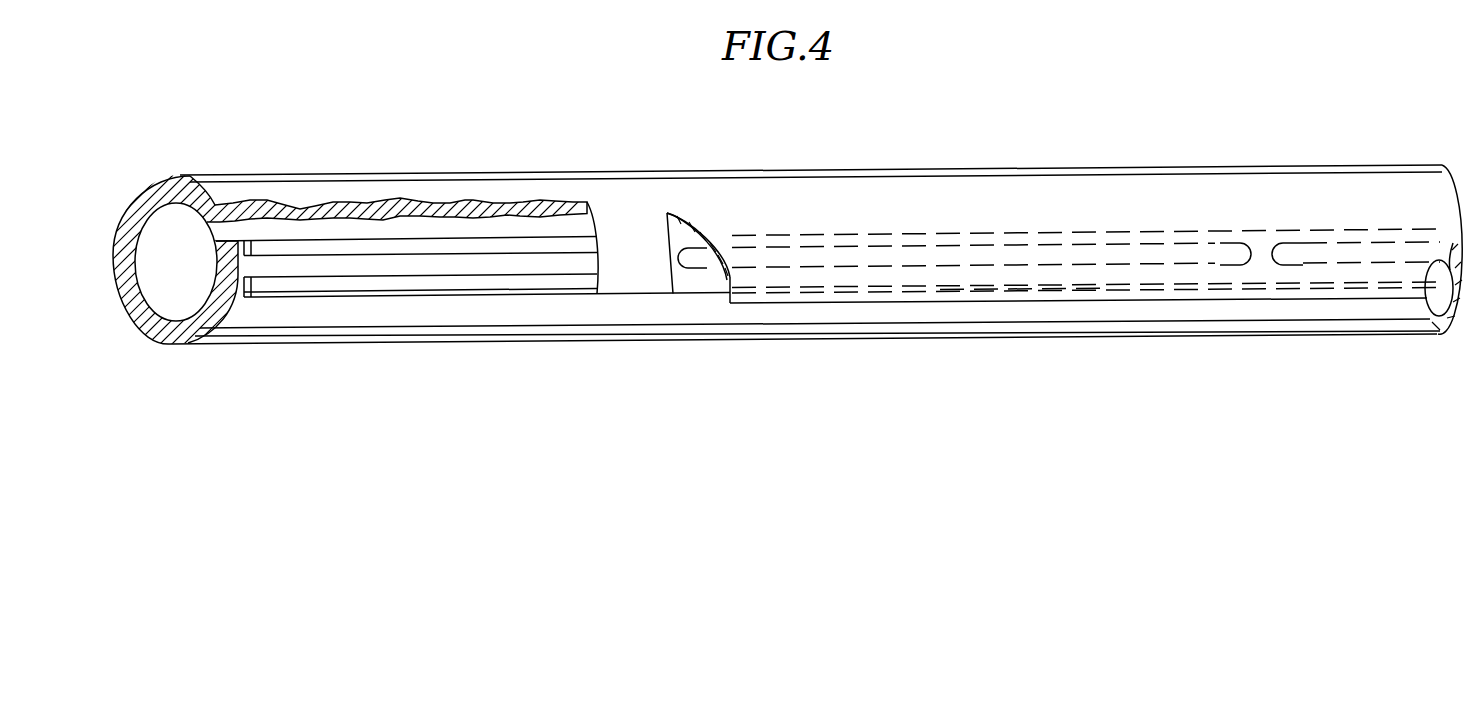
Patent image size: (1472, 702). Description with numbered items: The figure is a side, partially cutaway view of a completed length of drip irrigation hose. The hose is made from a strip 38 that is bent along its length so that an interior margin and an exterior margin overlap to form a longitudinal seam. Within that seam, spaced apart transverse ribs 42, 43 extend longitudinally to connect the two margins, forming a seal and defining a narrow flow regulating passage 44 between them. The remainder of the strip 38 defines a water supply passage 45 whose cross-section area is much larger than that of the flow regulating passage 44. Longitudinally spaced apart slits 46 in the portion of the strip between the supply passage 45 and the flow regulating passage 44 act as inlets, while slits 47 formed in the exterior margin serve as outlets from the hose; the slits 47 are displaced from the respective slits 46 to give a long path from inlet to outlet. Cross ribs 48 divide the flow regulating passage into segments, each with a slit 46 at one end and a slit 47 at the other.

The strip 38 is at (383, 173).
The rib 42 is at (447, 248).
The rib 43 is at (955, 275).
The flow regulating passage 44 is at (298, 263).
The water supply passage 45 is at (183, 287).
The slits 46 is at (250, 267).
The slits 47 is at (627, 259).
The cross ribs 48 is at (680, 237).